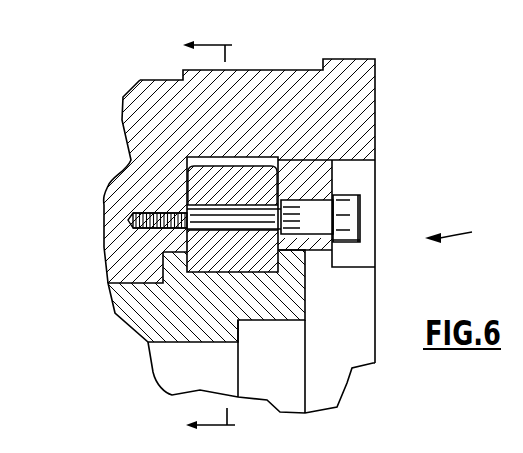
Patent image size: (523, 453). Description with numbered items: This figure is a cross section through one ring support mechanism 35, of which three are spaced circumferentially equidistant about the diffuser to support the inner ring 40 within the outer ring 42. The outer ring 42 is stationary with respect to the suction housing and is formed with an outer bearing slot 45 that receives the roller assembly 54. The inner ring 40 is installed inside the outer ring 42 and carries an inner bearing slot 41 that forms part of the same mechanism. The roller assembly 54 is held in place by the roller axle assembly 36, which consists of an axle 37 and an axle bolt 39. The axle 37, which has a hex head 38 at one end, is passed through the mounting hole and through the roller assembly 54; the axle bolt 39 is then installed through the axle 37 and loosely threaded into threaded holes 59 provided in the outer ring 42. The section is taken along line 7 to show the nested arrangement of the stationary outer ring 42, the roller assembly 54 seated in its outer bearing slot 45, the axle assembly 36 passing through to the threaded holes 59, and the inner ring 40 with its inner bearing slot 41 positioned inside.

The outer ring 42 is at (375, 95).
The roller assembly 54 is at (182, 177).
The outer bearing slot 45 is at (232, 165).
The inner bearing slot 41 is at (215, 274).
The inner ring 40 is at (307, 305).
The roller axle assembly 36 is at (367, 248).
The axle 37 is at (305, 185).
The threaded holes 59 is at (128, 218).
The axle bolt 39 is at (130, 231).
The hex head 38 is at (352, 193).
The ring support mechanism 35 is at (463, 233).
The section line 7- 7 is at (200, 235).